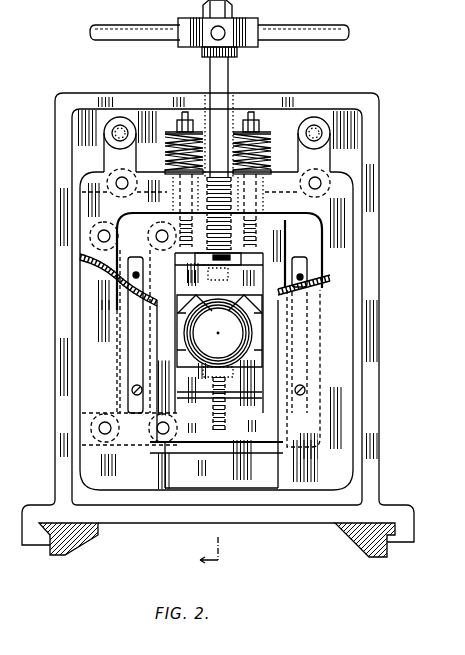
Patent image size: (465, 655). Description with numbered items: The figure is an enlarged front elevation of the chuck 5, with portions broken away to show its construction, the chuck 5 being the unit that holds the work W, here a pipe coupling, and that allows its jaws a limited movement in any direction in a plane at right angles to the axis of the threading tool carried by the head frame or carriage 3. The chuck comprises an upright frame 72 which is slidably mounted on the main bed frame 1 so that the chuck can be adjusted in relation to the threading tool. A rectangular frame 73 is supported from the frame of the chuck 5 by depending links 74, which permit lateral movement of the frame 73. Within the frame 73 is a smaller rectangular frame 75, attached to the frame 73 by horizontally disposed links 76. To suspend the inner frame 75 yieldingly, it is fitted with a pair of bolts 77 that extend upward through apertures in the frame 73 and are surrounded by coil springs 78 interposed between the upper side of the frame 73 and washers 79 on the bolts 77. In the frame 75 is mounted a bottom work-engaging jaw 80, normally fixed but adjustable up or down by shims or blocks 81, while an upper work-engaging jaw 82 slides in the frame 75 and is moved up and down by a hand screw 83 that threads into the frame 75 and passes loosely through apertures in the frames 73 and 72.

The main bed frame 1 is at (58, 556).
The head frame or carriage 3 is at (217, 553).
The chuck 5 is at (385, 253).
The upright frame 72 is at (379, 303).
The rectangular frame 73 is at (347, 218).
The depending links 74 is at (107, 151).
The smaller rectangular frame 75 is at (280, 253).
The horizontally disposed links 76 is at (135, 237).
The bolts 77 is at (183, 120).
The coil springs 78 is at (158, 135).
The washers 79 is at (196, 130).
The bottom work-engaging jaw 80 is at (255, 370).
The shims or blocks 81 is at (257, 408).
The upper work-engaging jaw 82 is at (257, 283).
The hand screw 83 is at (228, 68).
The work W is at (253, 337).